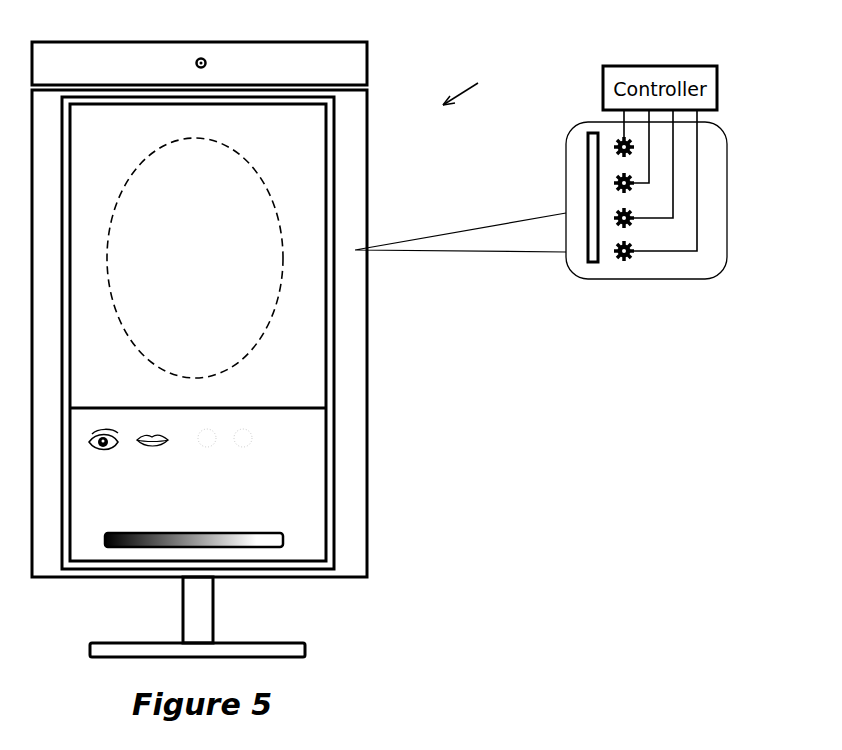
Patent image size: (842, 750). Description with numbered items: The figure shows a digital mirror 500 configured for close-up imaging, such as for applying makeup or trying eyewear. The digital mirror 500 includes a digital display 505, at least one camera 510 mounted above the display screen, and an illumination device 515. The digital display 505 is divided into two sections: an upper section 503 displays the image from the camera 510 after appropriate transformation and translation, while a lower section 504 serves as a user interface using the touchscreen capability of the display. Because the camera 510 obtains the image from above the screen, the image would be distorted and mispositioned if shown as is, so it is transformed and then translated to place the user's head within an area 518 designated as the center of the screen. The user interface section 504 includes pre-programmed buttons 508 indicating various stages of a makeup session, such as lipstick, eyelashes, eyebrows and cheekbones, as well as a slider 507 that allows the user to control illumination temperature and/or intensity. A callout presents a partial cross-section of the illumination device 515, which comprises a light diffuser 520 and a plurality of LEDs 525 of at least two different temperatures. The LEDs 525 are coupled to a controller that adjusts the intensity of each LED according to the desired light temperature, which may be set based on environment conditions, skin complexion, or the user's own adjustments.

The digital mirror 500 is at (487, 89).
The camera 510 is at (201, 58).
The illumination device 515 is at (347, 312).
The section 503 is at (325, 153).
The digital display 505 is at (330, 200).
The area 518 is at (230, 151).
The section 504 is at (315, 468).
The pre-programmed buttons 508 is at (107, 452).
The slider 507 is at (283, 532).
The light diffuser 520 is at (592, 263).
The LEDs 525 is at (637, 250).